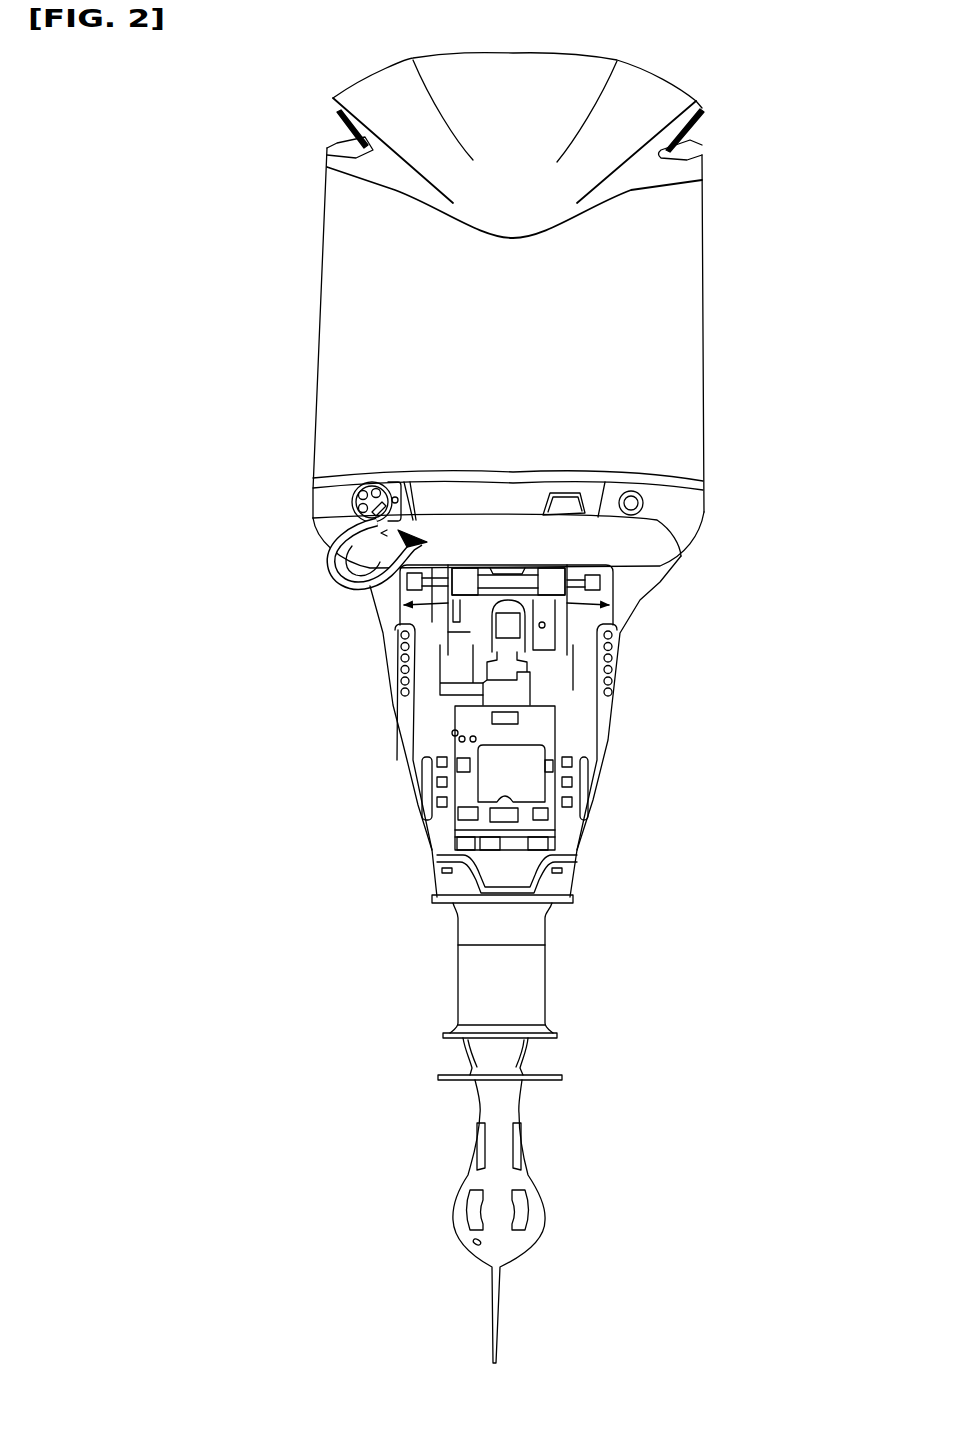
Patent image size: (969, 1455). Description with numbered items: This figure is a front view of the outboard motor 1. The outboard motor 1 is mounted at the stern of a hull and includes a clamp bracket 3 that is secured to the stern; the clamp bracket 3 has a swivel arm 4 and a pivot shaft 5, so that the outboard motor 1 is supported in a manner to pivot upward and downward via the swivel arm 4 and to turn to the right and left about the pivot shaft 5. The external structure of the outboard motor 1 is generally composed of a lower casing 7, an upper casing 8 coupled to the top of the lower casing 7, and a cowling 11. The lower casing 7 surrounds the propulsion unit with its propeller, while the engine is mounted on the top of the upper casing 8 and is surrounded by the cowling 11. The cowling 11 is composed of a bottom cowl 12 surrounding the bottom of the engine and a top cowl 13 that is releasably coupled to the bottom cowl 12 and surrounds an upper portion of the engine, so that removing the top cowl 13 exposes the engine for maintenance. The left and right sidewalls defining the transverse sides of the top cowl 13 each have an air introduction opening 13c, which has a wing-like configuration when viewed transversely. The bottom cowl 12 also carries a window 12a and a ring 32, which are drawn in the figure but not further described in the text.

The outboard motor 1 is at (266, 165).
The cowling 11 is at (320, 267).
The top cowl 13 is at (311, 352).
The air introduction opening 13c is at (337, 127).
The bottom cowl 12 is at (308, 518).
The window 12a is at (602, 488).
The ring 32 is at (643, 497).
The clamp bracket 3 is at (612, 757).
The swivel arm 4 is at (537, 678).
The pivot shaft 5 is at (535, 652).
The upper casing 8 is at (428, 886).
The lower casing 7 is at (466, 1166).